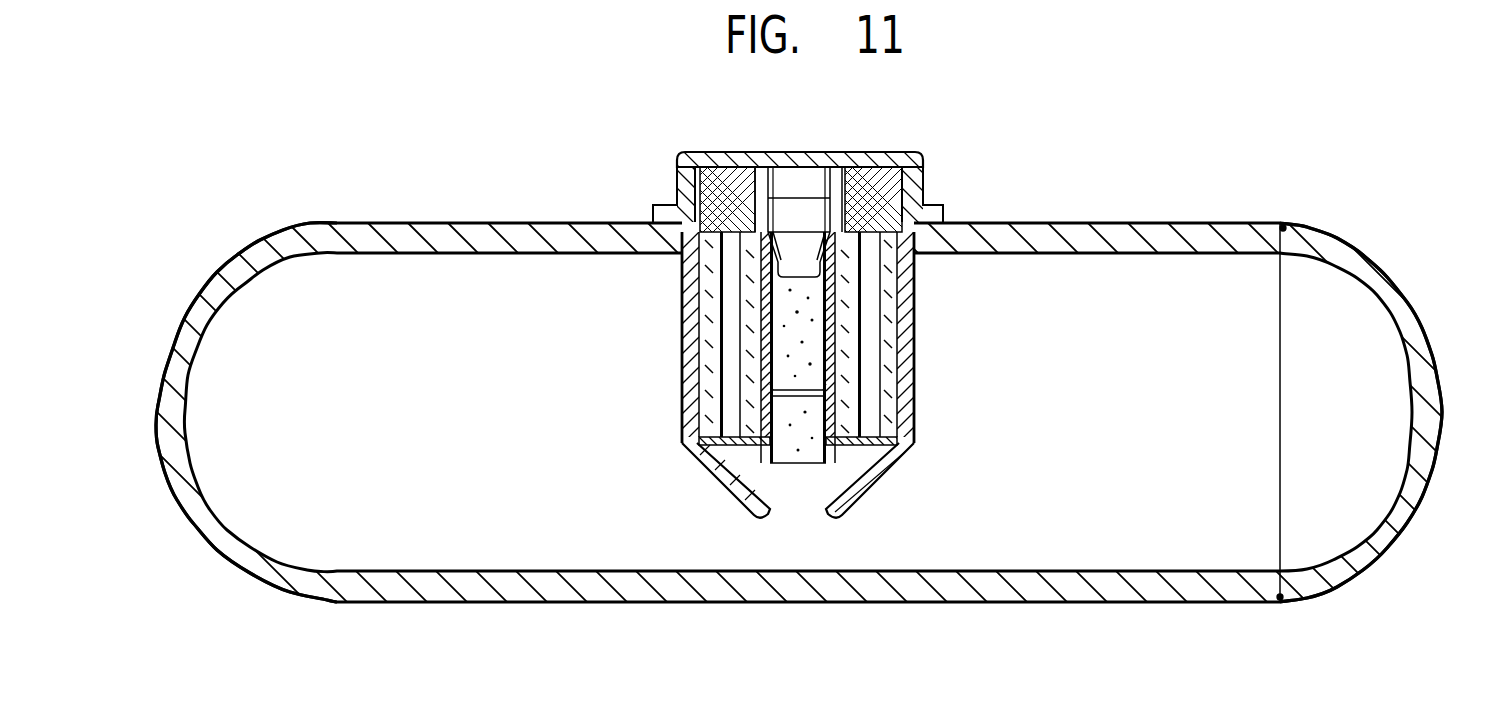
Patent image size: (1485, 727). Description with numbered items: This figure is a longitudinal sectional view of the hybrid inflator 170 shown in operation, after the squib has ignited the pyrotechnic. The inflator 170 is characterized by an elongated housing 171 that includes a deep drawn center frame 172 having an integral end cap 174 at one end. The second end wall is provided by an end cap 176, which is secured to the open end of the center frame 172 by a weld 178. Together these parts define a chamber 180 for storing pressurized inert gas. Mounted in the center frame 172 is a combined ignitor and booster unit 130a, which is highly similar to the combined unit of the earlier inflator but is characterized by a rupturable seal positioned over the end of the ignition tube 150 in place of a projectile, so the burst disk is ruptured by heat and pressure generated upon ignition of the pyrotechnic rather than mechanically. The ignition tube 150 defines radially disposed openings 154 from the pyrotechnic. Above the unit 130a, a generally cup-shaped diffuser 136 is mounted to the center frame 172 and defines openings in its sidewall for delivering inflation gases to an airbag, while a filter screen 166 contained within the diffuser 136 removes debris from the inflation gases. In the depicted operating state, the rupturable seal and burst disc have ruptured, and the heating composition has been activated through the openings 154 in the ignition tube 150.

The inflator 170 is at (742, 320).
The elongated housing 171 is at (742, 375).
The deep drawn center frame 172 is at (457, 236).
The integral end cap 174 is at (190, 322).
The end cap 176 is at (1400, 326).
The weld 178 is at (1282, 226).
The chamber 180 is at (1135, 379).
The combined ignitor and booster unit 130a is at (767, 312).
The diffuser 136 is at (730, 152).
The filter screen 166 is at (870, 152).
The radially disposed openings 154 is at (832, 345).
The ignition tube 150 is at (766, 458).